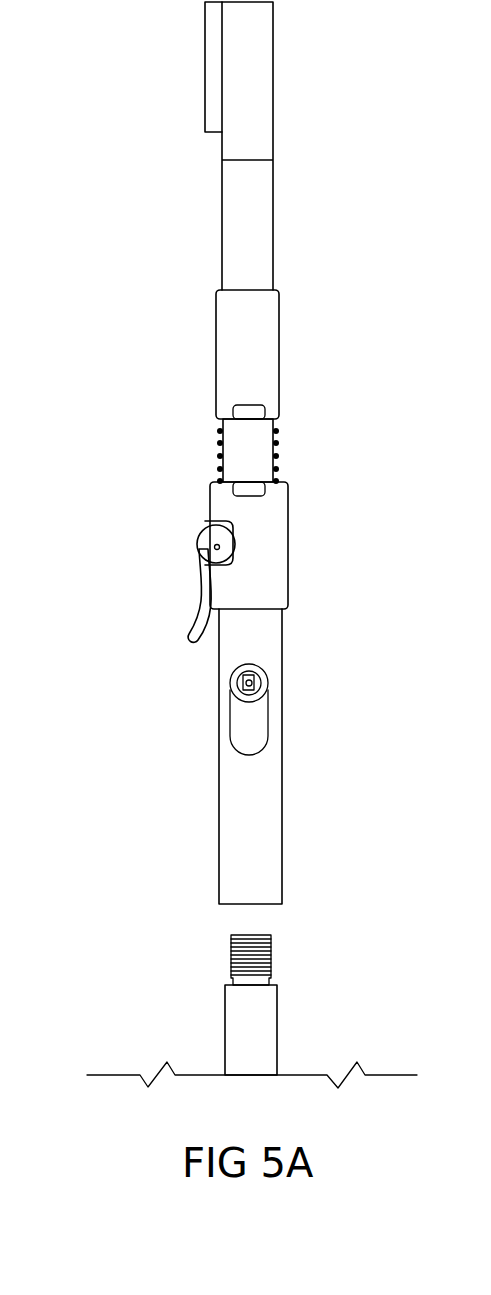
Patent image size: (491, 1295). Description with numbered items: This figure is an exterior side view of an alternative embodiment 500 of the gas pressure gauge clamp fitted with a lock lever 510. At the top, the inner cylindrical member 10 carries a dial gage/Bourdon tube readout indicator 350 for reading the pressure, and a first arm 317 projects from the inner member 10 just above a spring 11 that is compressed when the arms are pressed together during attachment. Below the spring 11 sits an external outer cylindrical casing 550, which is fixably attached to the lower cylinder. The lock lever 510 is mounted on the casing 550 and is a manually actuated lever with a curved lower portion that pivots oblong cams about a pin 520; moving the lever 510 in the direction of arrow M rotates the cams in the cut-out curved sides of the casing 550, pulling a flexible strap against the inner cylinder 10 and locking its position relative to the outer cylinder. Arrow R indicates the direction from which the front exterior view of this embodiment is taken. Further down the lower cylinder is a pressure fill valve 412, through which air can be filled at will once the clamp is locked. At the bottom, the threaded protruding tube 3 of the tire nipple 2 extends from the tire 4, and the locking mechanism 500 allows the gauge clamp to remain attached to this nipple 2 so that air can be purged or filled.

The dial gage/Bourdon tube readout indicator 350 is at (205, 72).
The inner cylindrical member 10 is at (273, 218).
The alternative embodiment with locking mechanism 500 is at (155, 212).
The arrow R is at (169, 325).
The first arm 317 is at (232, 415).
The spring 11 is at (278, 443).
The external outer cylindrical casing 550 is at (288, 510).
The pin 520 is at (217, 543).
The lock lever 510 is at (197, 585).
The arrow M is at (197, 615).
The pressure fill valve 412 is at (270, 682).
The threaded protruding tube 3 is at (269, 958).
The tire nipple 2 is at (277, 1028).
The tire 4 is at (113, 1075).